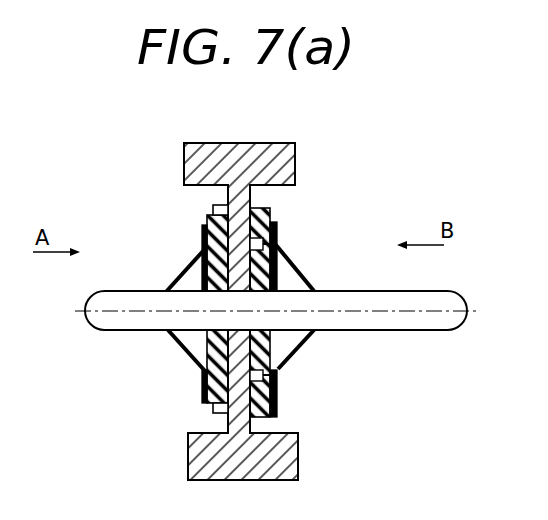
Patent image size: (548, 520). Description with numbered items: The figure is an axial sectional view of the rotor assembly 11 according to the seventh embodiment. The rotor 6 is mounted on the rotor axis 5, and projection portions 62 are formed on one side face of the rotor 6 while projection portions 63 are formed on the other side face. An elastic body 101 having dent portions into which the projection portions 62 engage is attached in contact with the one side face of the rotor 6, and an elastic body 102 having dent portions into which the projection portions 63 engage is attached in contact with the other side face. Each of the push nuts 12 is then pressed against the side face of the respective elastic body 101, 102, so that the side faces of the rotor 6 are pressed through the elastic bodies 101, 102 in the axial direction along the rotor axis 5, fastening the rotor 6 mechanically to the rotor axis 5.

The rotor assembly 11 is at (150, 164).
The rotor 6 is at (294, 151).
The rotor axis 5 is at (460, 292).
The push nuts 12 is at (180, 345).
The projection portions 62 is at (208, 210).
The projection portions 63 is at (266, 241).
The elastic body 101 is at (202, 258).
The elastic body 102 is at (272, 413).